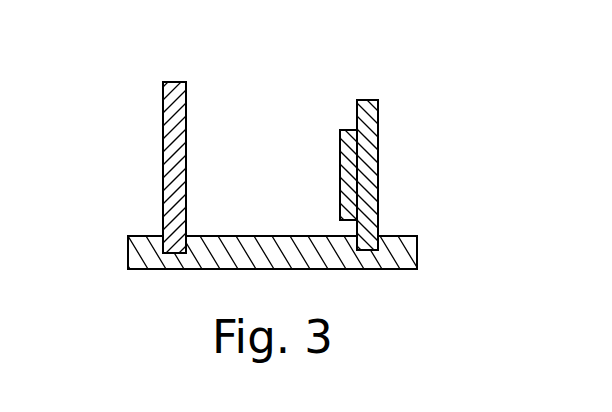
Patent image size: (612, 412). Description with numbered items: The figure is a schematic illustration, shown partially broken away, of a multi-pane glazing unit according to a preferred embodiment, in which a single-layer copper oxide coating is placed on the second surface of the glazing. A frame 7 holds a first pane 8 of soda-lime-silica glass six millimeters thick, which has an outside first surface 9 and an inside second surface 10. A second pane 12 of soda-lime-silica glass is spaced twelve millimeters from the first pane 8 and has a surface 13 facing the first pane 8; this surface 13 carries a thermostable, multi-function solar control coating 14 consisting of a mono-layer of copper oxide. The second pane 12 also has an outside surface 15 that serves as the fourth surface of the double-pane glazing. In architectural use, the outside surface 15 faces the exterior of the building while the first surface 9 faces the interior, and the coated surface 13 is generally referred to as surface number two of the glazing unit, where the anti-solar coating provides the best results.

The frame 7 is at (270, 242).
The first pane 8 is at (173, 82).
The outside first surface 9 is at (163, 114).
The inside second surface 10 is at (186, 134).
The second pane 12 is at (362, 100).
The surface 13 is at (358, 128).
The solar control coating 14 is at (346, 152).
The outside surface 15 is at (380, 222).